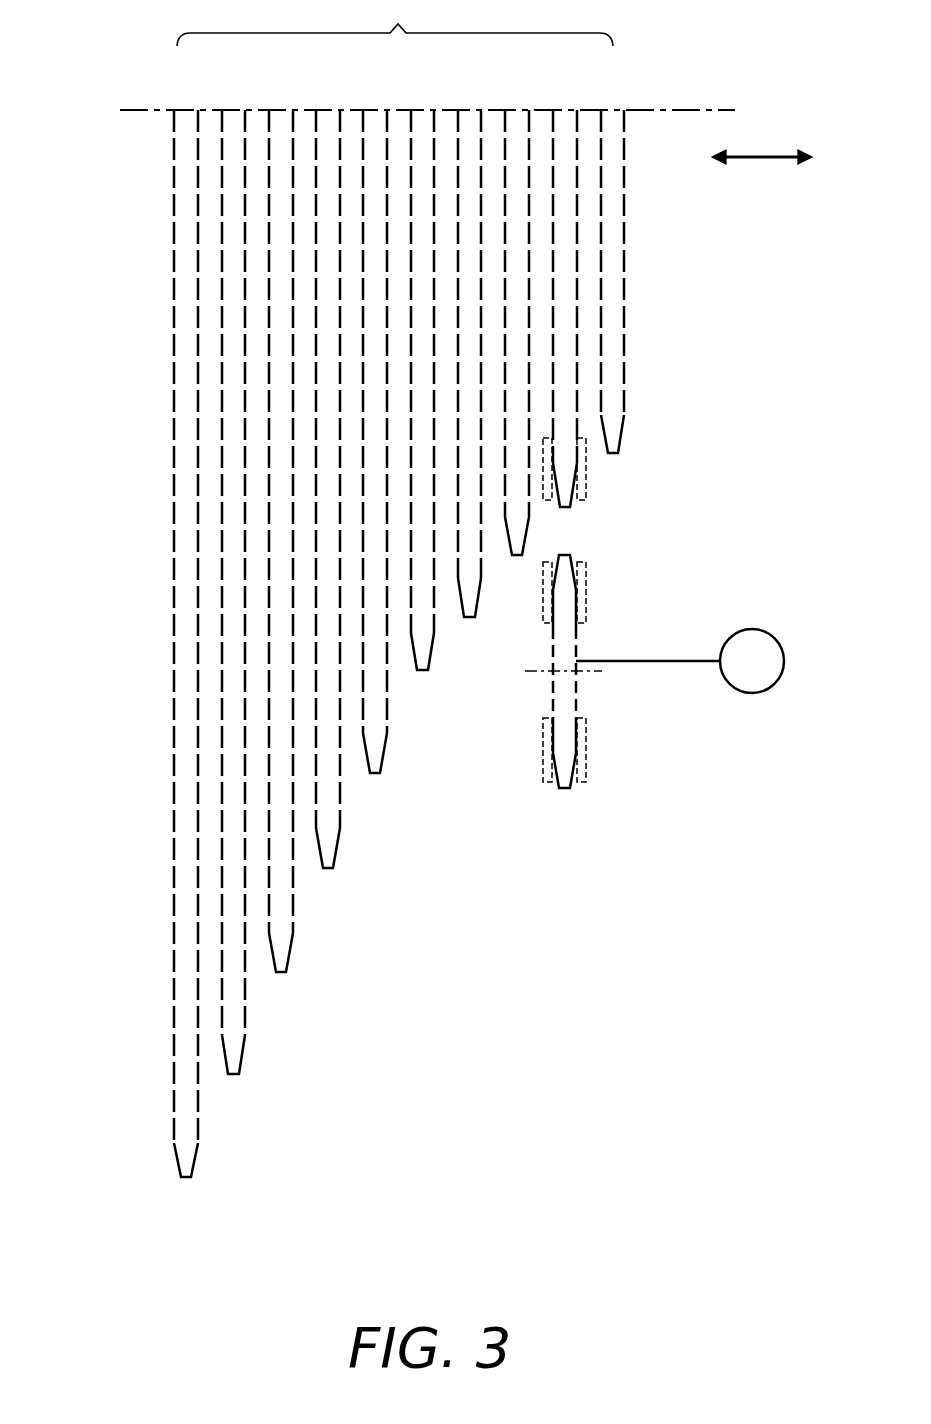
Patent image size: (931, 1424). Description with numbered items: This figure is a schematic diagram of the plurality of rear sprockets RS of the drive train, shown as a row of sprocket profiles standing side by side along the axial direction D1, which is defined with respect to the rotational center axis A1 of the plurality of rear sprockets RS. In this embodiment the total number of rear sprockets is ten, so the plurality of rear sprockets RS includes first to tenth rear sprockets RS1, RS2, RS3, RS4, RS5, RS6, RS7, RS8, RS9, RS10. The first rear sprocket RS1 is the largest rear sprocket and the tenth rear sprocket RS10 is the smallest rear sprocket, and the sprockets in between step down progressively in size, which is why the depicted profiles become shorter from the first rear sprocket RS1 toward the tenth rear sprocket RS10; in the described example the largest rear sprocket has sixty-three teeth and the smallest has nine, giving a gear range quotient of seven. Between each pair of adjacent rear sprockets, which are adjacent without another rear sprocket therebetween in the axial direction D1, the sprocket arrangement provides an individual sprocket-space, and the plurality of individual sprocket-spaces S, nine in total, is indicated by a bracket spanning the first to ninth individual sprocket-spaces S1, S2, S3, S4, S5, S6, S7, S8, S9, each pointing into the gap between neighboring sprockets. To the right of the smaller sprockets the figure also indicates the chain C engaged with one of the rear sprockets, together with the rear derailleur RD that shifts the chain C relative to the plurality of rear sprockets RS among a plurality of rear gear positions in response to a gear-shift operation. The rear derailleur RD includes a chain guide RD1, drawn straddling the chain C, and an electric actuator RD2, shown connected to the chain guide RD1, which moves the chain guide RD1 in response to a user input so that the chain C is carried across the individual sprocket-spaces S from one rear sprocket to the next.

The individual sprocket-spaces S is at (395, 23).
The first individual sprocket-space S1 is at (210, 123).
The second individual sprocket-space S2 is at (258, 123).
The third individual sprocket-space S3 is at (307, 123).
The fourth individual sprocket-space S4 is at (350, 126).
The fifth individual sprocket-space S5 is at (403, 123).
The sixth individual sprocket-space S6 is at (445, 126).
The seventh individual sprocket-space S7 is at (495, 126).
The eighth individual sprocket-space S8 is at (543, 128).
The ninth individual sprocket-space S9 is at (592, 126).
The rotational center axis A1 is at (715, 110).
The axial direction D1 is at (750, 155).
The rear sprockets RS is at (708, 266).
The first rear sprocket RS1 is at (175, 1148).
The second rear sprocket RS2 is at (243, 1080).
The third rear sprocket RS3 is at (290, 974).
The fourth rear sprocket RS4 is at (338, 871).
The fifth rear sprocket RS5 is at (387, 776).
The sixth rear sprocket RS6 is at (432, 668).
The seventh rear sprocket RS7 is at (477, 617).
The eighth rear sprocket RS8 is at (529, 551).
The ninth rear sprocket RS9 is at (572, 507).
The tenth rear sprocket RS10 is at (630, 452).
The chain C is at (589, 603).
The rear derailleur RD is at (604, 732).
The chain guide RD1 is at (580, 703).
The electric actuator RD2 is at (733, 675).